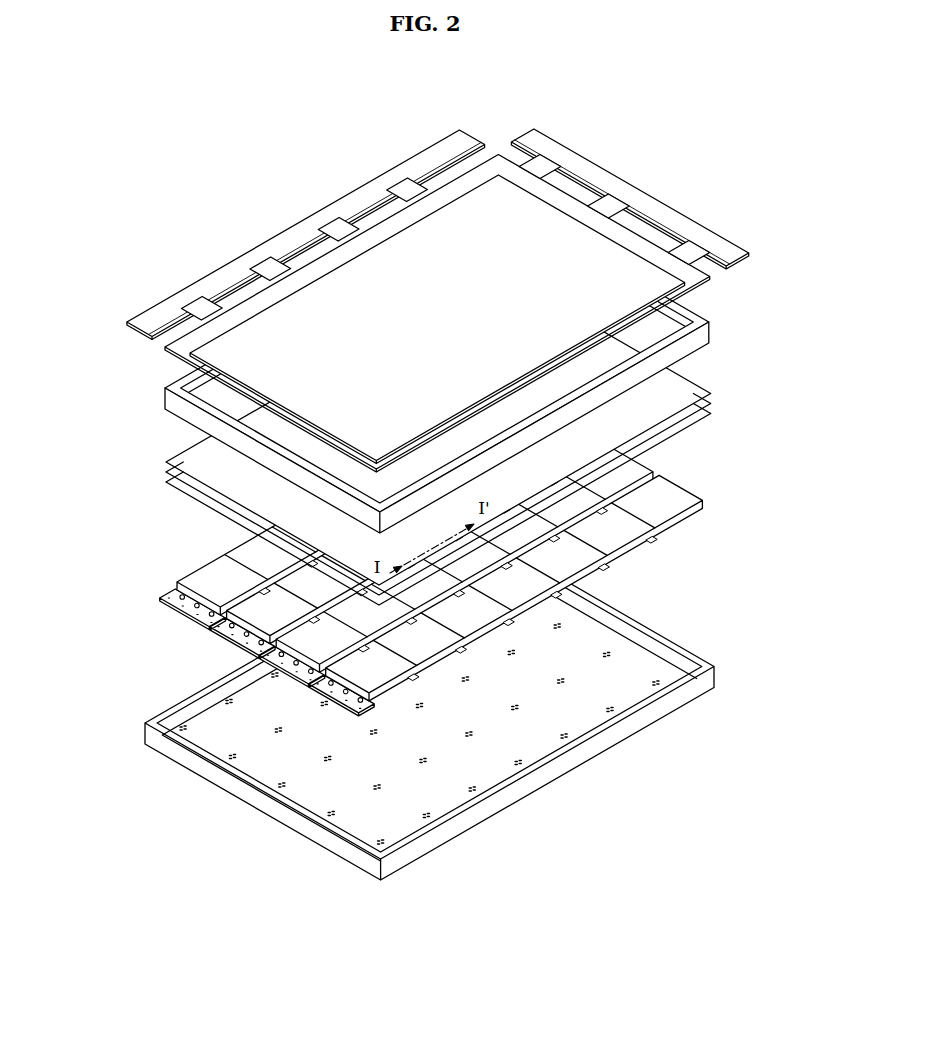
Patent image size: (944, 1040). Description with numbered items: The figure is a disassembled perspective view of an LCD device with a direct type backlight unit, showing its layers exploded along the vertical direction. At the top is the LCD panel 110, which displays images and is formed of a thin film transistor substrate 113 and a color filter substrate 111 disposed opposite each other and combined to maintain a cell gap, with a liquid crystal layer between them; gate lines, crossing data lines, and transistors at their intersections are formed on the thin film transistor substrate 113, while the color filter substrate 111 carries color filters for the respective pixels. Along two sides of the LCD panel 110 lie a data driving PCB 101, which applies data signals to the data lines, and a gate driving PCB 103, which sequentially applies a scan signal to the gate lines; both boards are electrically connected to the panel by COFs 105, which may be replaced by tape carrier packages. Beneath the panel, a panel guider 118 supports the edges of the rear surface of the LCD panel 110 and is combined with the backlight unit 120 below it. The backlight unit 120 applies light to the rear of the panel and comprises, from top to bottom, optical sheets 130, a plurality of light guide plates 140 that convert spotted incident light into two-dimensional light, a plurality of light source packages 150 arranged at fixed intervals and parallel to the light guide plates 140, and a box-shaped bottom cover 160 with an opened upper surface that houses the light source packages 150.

The data driving PCB 101 is at (452, 140).
The gate driving PCB 103 is at (580, 168).
The COF 105 is at (543, 166).
The LCD panel 110 is at (494, 314).
The color filter substrate 111 is at (648, 292).
The thin film transistor substrate 113 is at (692, 273).
The panel guider 118 is at (168, 400).
The backlight unit 120 is at (370, 576).
The optical sheets 130 is at (414, 438).
The light guide plate 140 is at (222, 558).
The light source package 150 is at (177, 622).
The bottom cover 160 is at (146, 736).